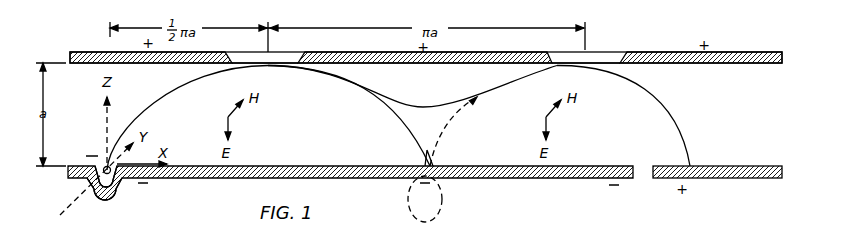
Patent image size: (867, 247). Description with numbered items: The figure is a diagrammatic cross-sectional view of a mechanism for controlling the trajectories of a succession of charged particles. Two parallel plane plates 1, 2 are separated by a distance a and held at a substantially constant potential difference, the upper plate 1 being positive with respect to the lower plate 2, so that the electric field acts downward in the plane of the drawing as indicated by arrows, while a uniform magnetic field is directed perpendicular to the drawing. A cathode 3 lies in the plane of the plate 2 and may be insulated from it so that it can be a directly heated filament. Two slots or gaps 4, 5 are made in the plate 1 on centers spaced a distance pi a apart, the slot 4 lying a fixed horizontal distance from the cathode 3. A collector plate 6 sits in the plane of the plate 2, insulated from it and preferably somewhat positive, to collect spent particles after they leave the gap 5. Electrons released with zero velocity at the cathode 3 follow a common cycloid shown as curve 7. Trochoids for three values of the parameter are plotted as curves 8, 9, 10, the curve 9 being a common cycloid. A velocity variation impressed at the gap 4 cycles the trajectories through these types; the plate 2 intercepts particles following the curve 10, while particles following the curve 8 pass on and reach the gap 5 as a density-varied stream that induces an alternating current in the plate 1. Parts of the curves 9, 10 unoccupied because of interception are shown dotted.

The plate 1 is at (757, 52).
The plate 2 is at (217, 178).
The cathode 3 is at (110, 191).
The slot 4 is at (301, 52).
The slot 5 is at (603, 52).
The collector plate 6 is at (752, 178).
The curve 7 is at (148, 104).
The curve 8 is at (412, 106).
The curve 9 is at (428, 153).
The curve 10 is at (441, 207).